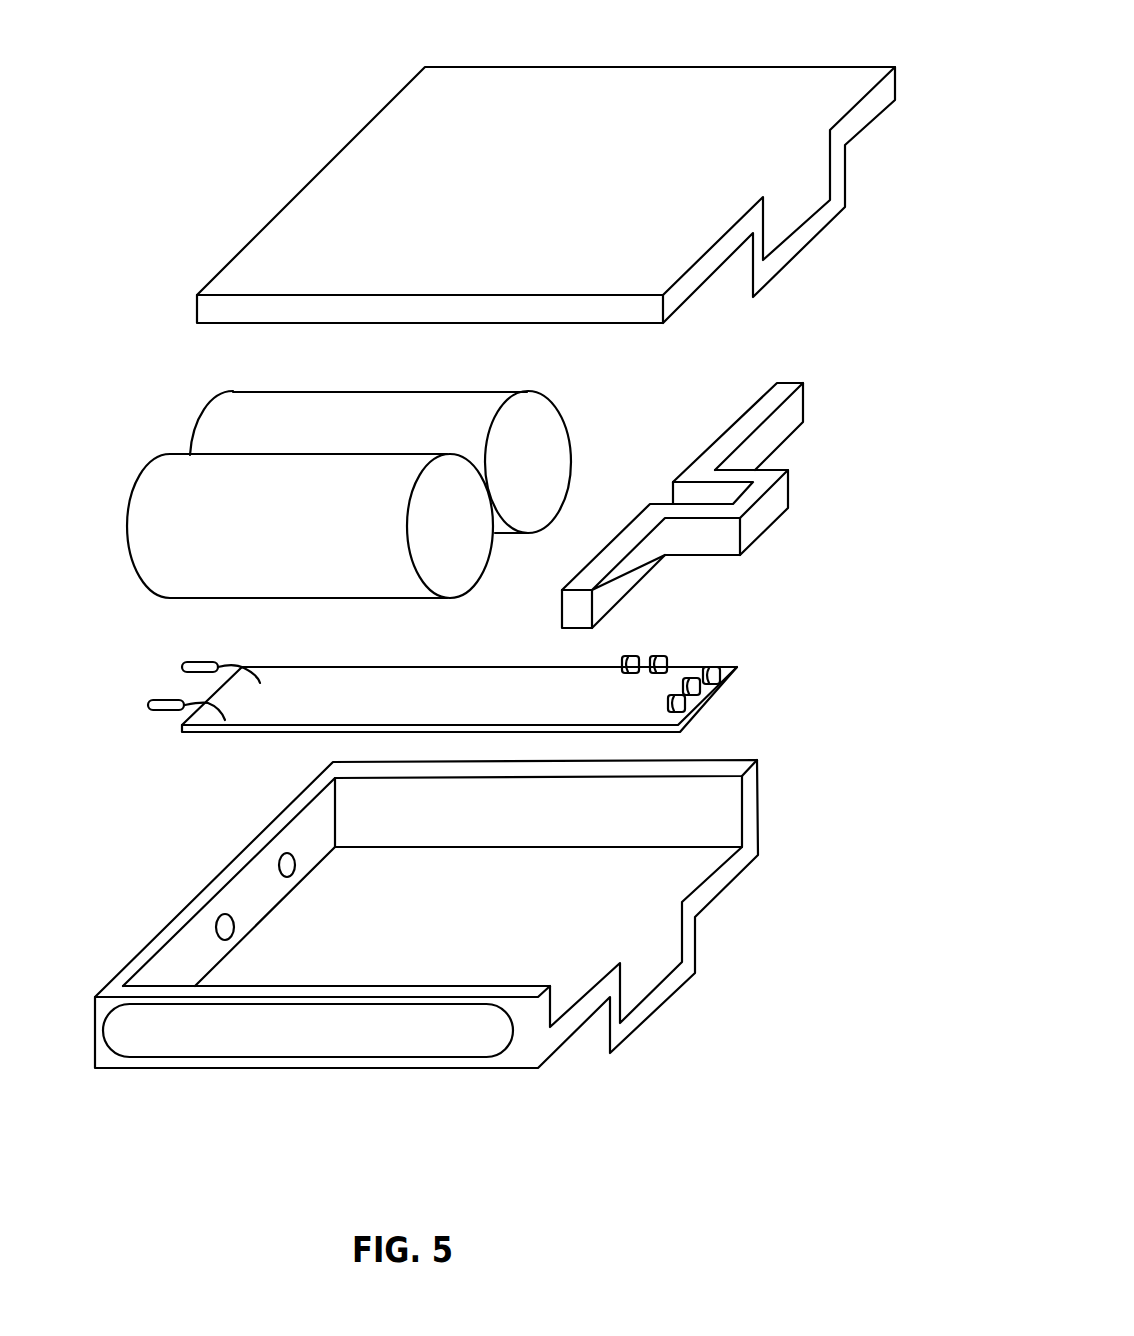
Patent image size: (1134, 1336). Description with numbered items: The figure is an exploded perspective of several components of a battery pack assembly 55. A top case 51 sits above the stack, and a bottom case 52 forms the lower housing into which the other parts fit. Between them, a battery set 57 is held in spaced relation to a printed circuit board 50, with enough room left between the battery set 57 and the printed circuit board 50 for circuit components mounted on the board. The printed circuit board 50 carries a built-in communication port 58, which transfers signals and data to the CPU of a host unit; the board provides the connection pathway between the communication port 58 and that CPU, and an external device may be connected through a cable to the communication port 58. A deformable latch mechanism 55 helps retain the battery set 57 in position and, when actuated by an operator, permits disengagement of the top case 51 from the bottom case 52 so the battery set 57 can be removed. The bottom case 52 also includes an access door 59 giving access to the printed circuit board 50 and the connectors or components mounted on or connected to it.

The printed circuit board 50 is at (740, 663).
The top case 51 is at (885, 65).
The bottom case 52 is at (743, 910).
The deformable latch mechanism 55 is at (788, 470).
The battery set 57 is at (167, 442).
The communication port 58 is at (665, 648).
The access door 59 is at (435, 1052).